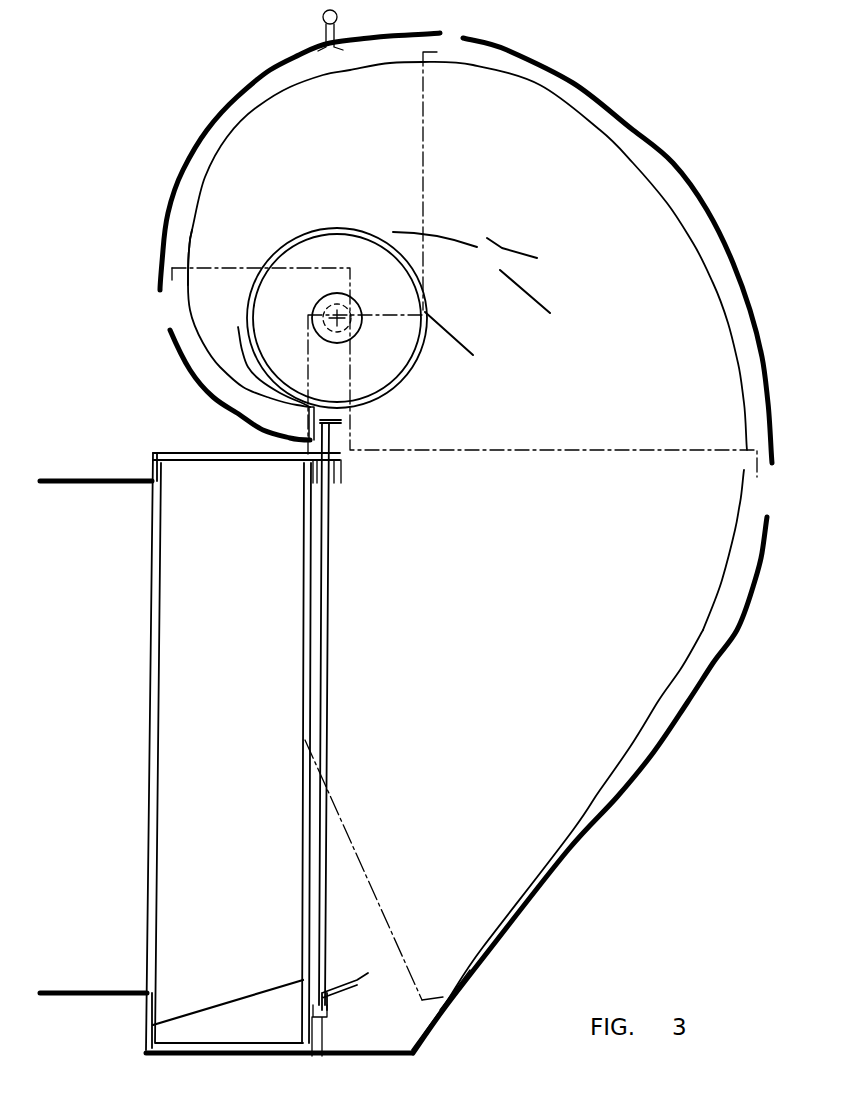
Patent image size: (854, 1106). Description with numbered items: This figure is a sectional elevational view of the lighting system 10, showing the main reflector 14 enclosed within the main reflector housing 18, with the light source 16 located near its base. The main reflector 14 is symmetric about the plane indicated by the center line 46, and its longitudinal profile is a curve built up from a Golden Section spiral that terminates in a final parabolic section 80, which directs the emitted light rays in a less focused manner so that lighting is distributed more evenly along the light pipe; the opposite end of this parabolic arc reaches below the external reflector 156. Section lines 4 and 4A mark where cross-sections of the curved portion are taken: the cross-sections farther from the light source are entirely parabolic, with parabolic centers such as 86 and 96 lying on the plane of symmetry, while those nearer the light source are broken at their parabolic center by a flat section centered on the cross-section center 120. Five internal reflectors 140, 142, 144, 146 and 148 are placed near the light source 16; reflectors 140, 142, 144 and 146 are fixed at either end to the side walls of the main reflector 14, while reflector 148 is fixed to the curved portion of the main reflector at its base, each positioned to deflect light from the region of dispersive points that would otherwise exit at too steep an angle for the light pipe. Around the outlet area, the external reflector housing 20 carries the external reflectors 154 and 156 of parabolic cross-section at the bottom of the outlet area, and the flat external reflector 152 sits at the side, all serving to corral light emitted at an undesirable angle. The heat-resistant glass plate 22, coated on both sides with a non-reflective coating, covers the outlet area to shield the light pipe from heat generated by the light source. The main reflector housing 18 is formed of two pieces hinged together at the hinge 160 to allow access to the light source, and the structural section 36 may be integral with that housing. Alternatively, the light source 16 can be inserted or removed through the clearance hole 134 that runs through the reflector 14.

The lighting system 10 is at (603, 824).
The main reflector 14 is at (735, 530).
The light source 16 is at (388, 236).
The main reflector housing 18 is at (255, 88).
The external reflector housing 20 is at (175, 453).
The heat-resistant glass plate 22 is at (325, 727).
The structural section 36 is at (310, 420).
The center line 46 is at (732, 345).
The parabolic section 80 is at (660, 700).
The parabolic section center 86 is at (422, 1000).
The parabolic section center 96 is at (427, 63).
The cross-section center 120 is at (190, 267).
The clearance hole 134 is at (298, 240).
The internal reflector 140 is at (448, 328).
The internal reflector 142 is at (515, 285).
The internal reflector 144 is at (515, 247).
The internal reflector 146 is at (428, 230).
The internal reflector 148 is at (238, 362).
The external reflector 152 is at (148, 750).
The external reflector 154 is at (198, 1000).
The external reflector 156 is at (375, 942).
The hinge 160 is at (322, 17).
The section line 4- 4 is at (389, 521).
The section line 4A- 4A is at (466, 389).